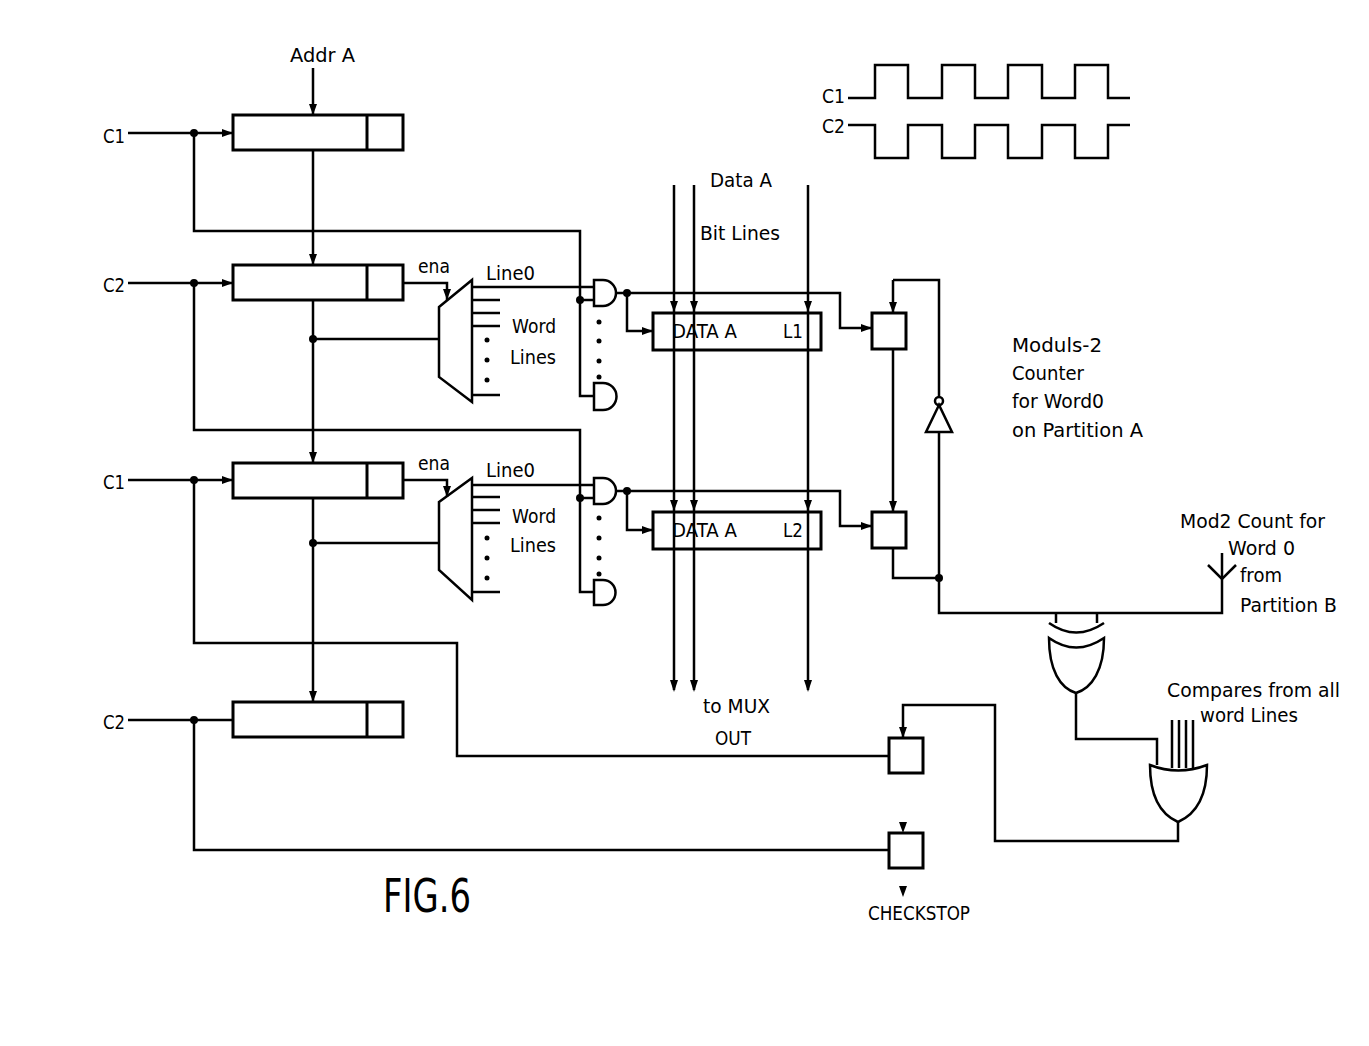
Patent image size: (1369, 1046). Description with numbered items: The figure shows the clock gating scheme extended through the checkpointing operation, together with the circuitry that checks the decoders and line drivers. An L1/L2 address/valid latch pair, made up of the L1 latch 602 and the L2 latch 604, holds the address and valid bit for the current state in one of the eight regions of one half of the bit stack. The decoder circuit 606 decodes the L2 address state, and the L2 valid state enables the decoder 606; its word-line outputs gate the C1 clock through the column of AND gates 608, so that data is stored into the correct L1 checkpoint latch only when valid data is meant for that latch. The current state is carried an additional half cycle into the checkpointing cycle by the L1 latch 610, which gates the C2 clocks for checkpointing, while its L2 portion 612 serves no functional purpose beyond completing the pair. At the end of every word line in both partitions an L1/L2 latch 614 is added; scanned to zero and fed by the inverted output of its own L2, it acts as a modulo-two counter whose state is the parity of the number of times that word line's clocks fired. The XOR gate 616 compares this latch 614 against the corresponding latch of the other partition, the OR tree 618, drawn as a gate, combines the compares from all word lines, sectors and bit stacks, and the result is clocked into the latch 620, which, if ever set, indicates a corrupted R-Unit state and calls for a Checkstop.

The L1 address/valid latch 602 is at (363, 114).
The L2 address/valid latch 604 is at (363, 264).
The decoder circuit 606 is at (439, 368).
The column of AND gates 608 is at (600, 280).
The L1 latch 610 is at (362, 462).
The L2 latch 612 is at (361, 702).
The L1/L2 latch (modulo-2 counter) 614 is at (883, 512).
The XOR gate 616 is at (1101, 666).
The OR tree 618 is at (1206, 800).
The latch 620 is at (931, 803).